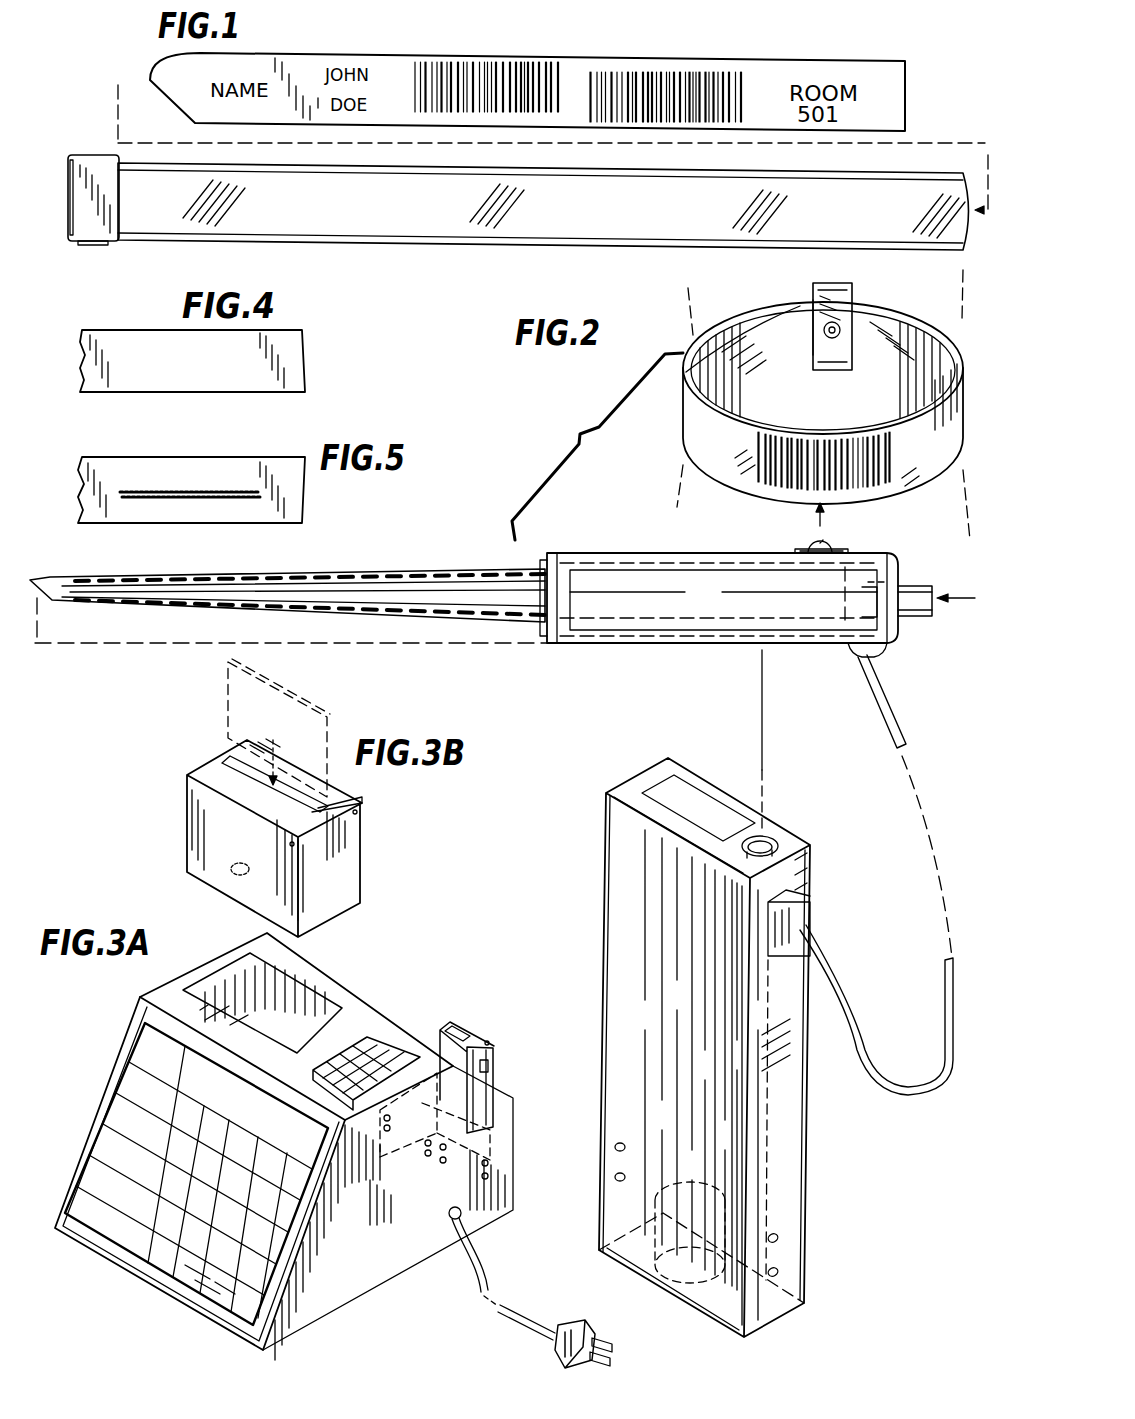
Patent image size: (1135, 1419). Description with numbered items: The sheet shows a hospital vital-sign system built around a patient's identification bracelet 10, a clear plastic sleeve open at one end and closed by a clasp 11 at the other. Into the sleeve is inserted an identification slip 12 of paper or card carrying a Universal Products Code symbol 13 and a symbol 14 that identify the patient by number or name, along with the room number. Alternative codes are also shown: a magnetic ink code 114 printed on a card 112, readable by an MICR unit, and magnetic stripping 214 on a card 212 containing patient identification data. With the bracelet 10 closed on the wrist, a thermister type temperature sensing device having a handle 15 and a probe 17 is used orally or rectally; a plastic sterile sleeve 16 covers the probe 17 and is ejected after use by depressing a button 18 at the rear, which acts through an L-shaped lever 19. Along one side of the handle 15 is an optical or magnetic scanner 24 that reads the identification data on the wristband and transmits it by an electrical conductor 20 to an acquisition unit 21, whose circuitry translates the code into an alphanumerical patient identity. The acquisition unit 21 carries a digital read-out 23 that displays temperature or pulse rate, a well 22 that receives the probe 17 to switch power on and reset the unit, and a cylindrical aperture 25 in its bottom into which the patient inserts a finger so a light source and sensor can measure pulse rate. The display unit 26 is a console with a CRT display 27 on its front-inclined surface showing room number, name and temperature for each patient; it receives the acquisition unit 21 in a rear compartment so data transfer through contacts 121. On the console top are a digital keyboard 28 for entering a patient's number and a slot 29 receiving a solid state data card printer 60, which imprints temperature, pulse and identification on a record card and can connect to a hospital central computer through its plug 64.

In FIG. 1, the identification bracelet 10 is at (405, 243).
In FIG. 2, the identification bracelet 10 is at (748, 305).
In FIG. 2, the clasp 11 is at (826, 285).
In FIG. 1, the identification slip 12 is at (404, 54).
In FIG. 2, the identification slip 12 is at (726, 413).
In FIG. 1, the Universal Products Code symbol 13 is at (604, 61).
In FIG. 2, the Universal Products Code symbol 13 is at (920, 412).
In FIG. 1, the identification symbol 14 is at (517, 55).
In FIG. 2, the identification symbol 14 is at (802, 426).
In FIG. 2, the handle 15 is at (757, 586).
In FIG. 2, the plastic sterile sleeve 16 is at (448, 613).
In FIG. 2, the probe 17 is at (246, 576).
In FIG. 2, the button 18 is at (918, 618).
In FIG. 2, the L-shaped lever 19 is at (716, 626).
In FIG. 2, the electrical conductor 20 is at (887, 706).
In FIG. 2, the acquisition unit 21 is at (712, 1042).
In FIG. 3A, the acquisition unit 21 is at (478, 1033).
In FIG. 2, the well 22 is at (765, 838).
In FIG. 2, the digital read-out 23 is at (664, 790).
In FIG. 2, the optical or magnetic scanner 24 is at (808, 546).
In FIG. 2, the cylindrical aperture 25 is at (668, 1198).
In FIG. 3A, the display unit 26 is at (206, 960).
In FIG. 3A, the CRT display 27 is at (330, 1290).
In FIG. 3A, the digital keyboard 28 is at (357, 1122).
In FIG. 3B, the slot 29 is at (350, 795).
In FIG. 3B, the data card printer 60 is at (202, 770).
In FIG. 3B, the plug 64 is at (231, 871).
In FIG. 4, the card 112 is at (150, 393).
In FIG. 4, the magnetic ink code 114 is at (200, 368).
In FIG. 2, the contacts 121 is at (779, 1273).
In FIG. 3A, the contacts 121 is at (616, 1176).
In FIG. 5, the card 212 is at (137, 523).
In FIG. 5, the magnetic stripping 214 is at (227, 500).